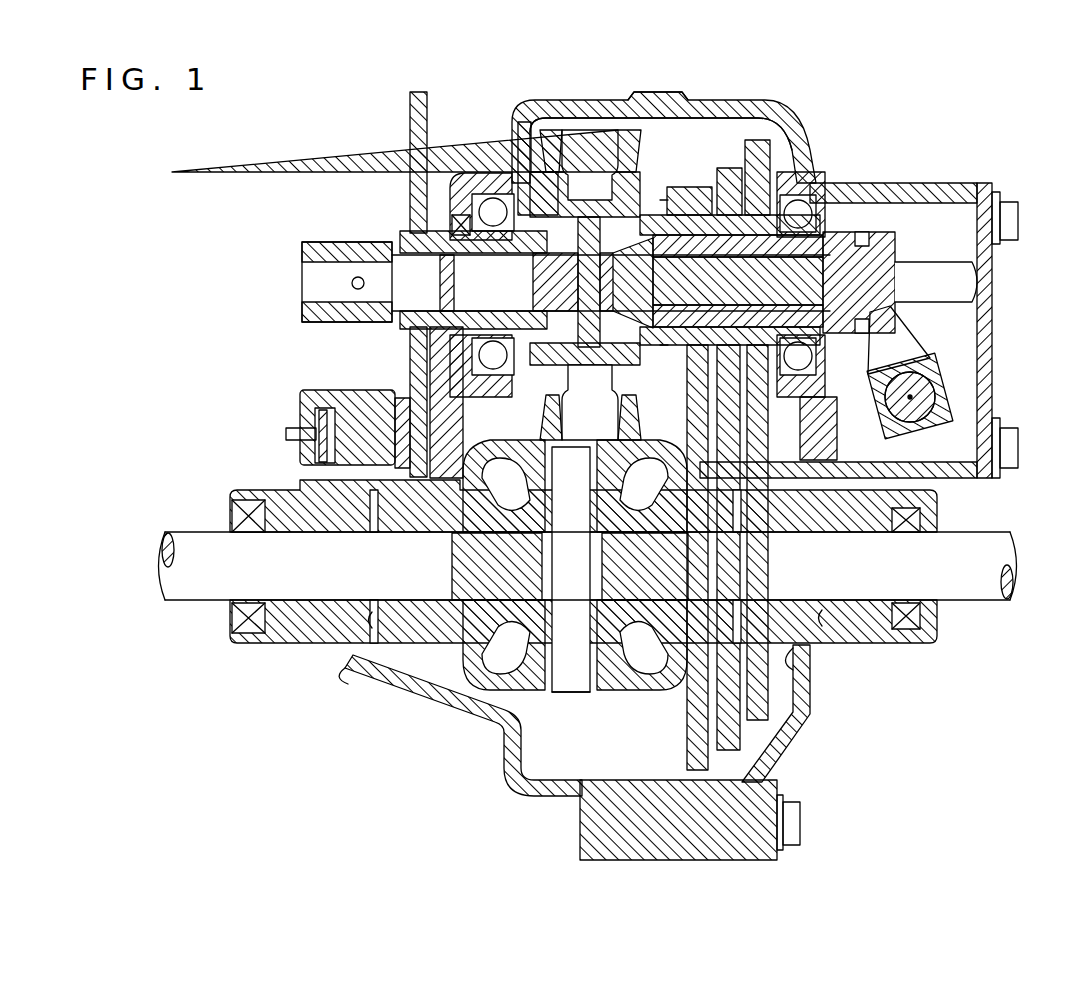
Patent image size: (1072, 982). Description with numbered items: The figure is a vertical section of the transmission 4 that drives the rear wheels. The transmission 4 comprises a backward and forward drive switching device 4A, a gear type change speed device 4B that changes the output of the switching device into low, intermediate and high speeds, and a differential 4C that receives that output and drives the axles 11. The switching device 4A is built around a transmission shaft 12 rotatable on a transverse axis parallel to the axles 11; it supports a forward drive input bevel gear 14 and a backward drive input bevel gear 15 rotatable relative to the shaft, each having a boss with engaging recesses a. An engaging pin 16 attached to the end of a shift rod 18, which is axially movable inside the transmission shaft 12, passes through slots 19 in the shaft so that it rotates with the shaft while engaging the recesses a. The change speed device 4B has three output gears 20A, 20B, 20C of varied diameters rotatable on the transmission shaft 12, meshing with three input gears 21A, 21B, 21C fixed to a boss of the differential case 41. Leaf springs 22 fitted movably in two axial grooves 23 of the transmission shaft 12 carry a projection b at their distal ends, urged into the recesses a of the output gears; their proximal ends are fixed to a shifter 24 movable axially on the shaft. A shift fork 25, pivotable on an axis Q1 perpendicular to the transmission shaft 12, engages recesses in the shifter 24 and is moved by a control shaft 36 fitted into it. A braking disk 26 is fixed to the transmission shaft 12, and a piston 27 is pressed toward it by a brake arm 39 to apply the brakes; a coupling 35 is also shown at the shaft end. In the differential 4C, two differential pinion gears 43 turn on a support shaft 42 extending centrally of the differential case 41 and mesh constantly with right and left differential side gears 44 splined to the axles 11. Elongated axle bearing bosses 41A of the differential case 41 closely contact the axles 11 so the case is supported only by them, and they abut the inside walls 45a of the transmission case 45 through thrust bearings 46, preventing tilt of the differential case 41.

The transmission 4 is at (845, 98).
The backward and forward drive switching device 4A is at (587, 134).
The gear type change speed device 4B is at (718, 120).
The differential 4C is at (582, 703).
The axles 11 is at (192, 598).
The transmission shaft 12 is at (958, 290).
The forward drive input bevel gear 14 is at (627, 94).
The backward drive input bevel gear 15 is at (548, 128).
The engaging pin 16 is at (560, 235).
The backward and forward drive switching shift rod 18 is at (392, 262).
The slots 19 is at (538, 195).
The output gear 20A is at (692, 190).
The output gear 20B is at (737, 168).
The output gear 20C is at (800, 148).
The input gear 21A is at (698, 742).
The input gear 21B is at (757, 773).
The input gear 21C is at (762, 712).
The leaf springs 22 is at (807, 327).
The axial grooves 23 is at (757, 318).
The shifter 24 is at (890, 245).
The shift fork 25 is at (903, 347).
The braking disk 26 is at (412, 152).
The piston 27 is at (362, 402).
The coupling 35 is at (307, 240).
The control shaft 36 is at (892, 418).
The brake arm 39 is at (290, 437).
The differential case 41 is at (495, 680).
The axle bearing bosses 41A is at (740, 605).
The support shaft 42 is at (568, 680).
The differential pinion gears 43 is at (523, 460).
The differential side gears 44 is at (650, 537).
The transmission case 45 is at (522, 796).
The inside walls 45a is at (795, 680).
The thrust bearings 46 is at (372, 612).
The engaging recesses a is at (441, 285).
The projection b is at (682, 202).
The axis Q1 is at (910, 397).